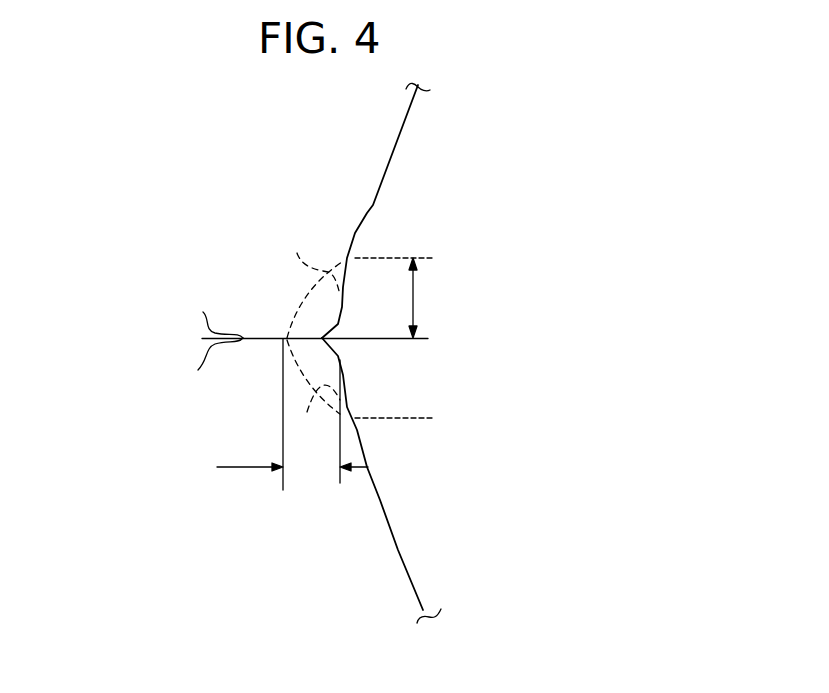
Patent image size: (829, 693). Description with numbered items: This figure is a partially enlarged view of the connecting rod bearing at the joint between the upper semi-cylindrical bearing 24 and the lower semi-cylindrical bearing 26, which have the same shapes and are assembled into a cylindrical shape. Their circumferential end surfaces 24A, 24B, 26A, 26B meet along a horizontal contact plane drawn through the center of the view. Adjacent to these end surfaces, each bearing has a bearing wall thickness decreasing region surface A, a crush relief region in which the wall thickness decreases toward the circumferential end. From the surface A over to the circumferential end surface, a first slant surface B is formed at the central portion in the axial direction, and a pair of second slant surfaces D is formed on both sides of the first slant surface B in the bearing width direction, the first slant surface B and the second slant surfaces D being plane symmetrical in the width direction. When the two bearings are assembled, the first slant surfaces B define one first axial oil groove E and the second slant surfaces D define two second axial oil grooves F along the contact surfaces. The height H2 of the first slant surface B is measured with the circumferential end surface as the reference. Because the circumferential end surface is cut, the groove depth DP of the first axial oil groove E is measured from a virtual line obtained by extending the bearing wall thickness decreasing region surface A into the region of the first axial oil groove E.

The upper semi-cylindrical bearing 24 is at (394, 113).
The lower semi-cylindrical bearing 26 is at (395, 575).
The circumferential end surface 24A is at (175, 371).
The circumferential end surface 24B is at (220, 354).
The circumferential end surface 26A is at (268, 306).
The circumferential end surface 26B is at (223, 325).
The bearing wall thickness decreasing region surface A is at (367, 216).
The first slant surface B is at (315, 301).
The second slant surface D is at (339, 325).
The first axial oil groove E is at (315, 320).
The second axial oil groove F is at (366, 353).
The height of the first slant surface H2 is at (420, 301).
The groove depth DP is at (313, 471).